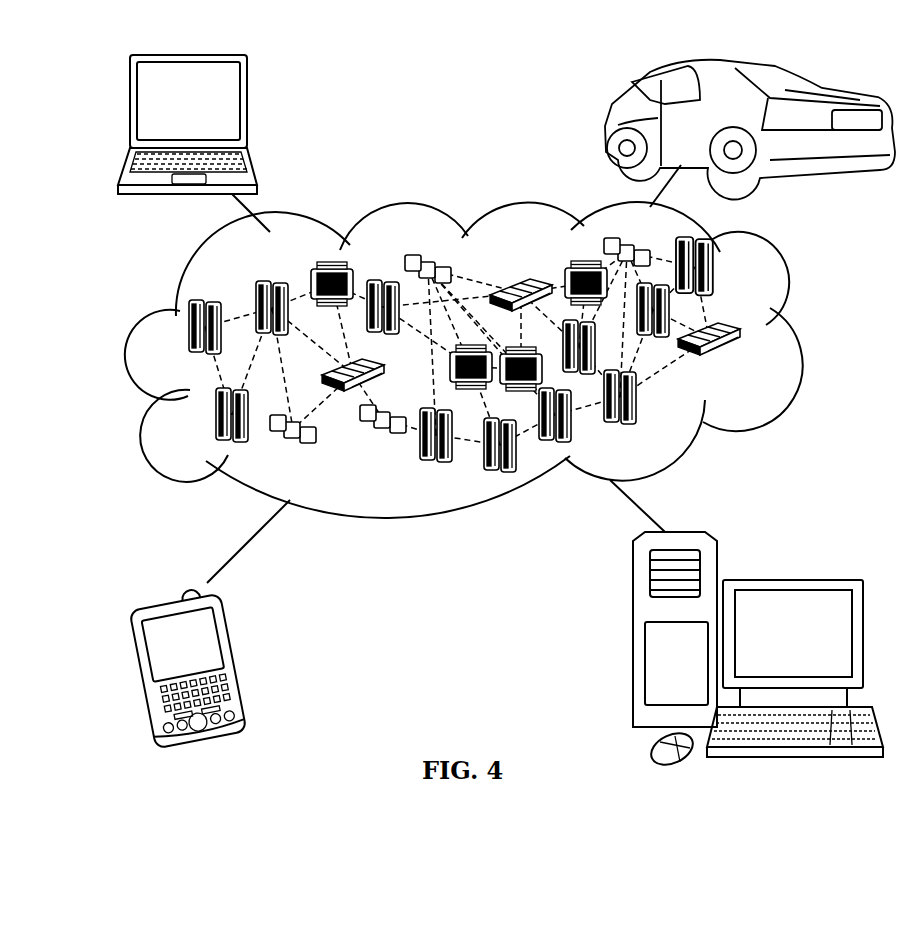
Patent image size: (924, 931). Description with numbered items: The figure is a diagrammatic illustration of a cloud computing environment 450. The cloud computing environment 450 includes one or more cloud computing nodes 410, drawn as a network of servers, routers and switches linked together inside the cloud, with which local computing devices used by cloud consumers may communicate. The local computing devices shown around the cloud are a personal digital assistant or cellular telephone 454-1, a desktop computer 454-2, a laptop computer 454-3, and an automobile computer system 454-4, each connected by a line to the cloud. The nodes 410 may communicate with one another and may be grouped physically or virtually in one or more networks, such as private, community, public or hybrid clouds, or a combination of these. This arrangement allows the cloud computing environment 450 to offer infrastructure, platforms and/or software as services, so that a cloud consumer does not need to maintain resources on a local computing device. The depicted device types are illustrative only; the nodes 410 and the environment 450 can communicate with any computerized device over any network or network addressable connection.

The cloud computing environment 450 is at (791, 339).
The cloud computing nodes 410 is at (742, 359).
The personal digital assistant or cellular telephone 454-1 is at (240, 660).
The desktop computer 454-2 is at (792, 580).
The laptop computer 454-3 is at (249, 110).
The automobile computer system 454-4 is at (608, 124).